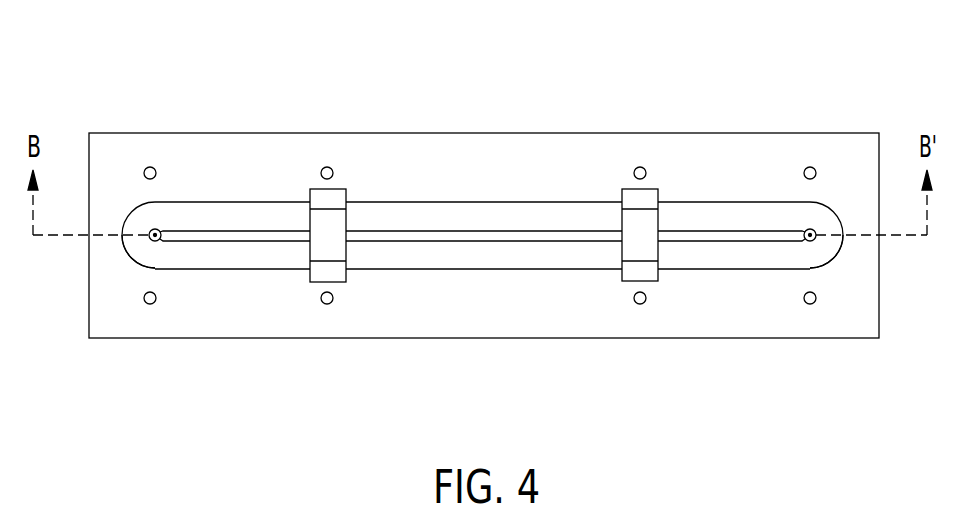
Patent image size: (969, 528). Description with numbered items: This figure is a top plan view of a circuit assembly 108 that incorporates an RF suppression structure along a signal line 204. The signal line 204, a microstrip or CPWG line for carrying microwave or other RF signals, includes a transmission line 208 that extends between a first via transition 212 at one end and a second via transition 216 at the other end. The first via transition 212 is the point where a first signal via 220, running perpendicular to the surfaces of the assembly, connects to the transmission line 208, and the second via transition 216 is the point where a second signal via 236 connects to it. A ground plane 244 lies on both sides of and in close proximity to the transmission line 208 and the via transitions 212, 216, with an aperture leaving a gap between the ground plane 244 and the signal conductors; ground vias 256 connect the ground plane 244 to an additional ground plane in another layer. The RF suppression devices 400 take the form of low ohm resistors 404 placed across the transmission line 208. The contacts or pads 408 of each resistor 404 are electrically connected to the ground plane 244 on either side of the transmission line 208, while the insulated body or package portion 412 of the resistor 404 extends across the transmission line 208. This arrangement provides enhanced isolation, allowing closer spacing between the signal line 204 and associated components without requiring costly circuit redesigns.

The circuit assembly 108 is at (832, 48).
The signal line 204 is at (199, 114).
The transmission line 208 is at (443, 230).
The first via transition 212 is at (152, 203).
The second via transition 216 is at (812, 203).
The first signal via 220 is at (148, 270).
The second signal via 236 is at (813, 268).
The ground plane 244 is at (560, 148).
The ground vias 256 is at (327, 167).
The RF suppression device 400 is at (342, 275).
The low ohm resistor 404 is at (310, 193).
The contacts or pads 408 is at (653, 198).
The insulated body or package portion 412 is at (336, 222).